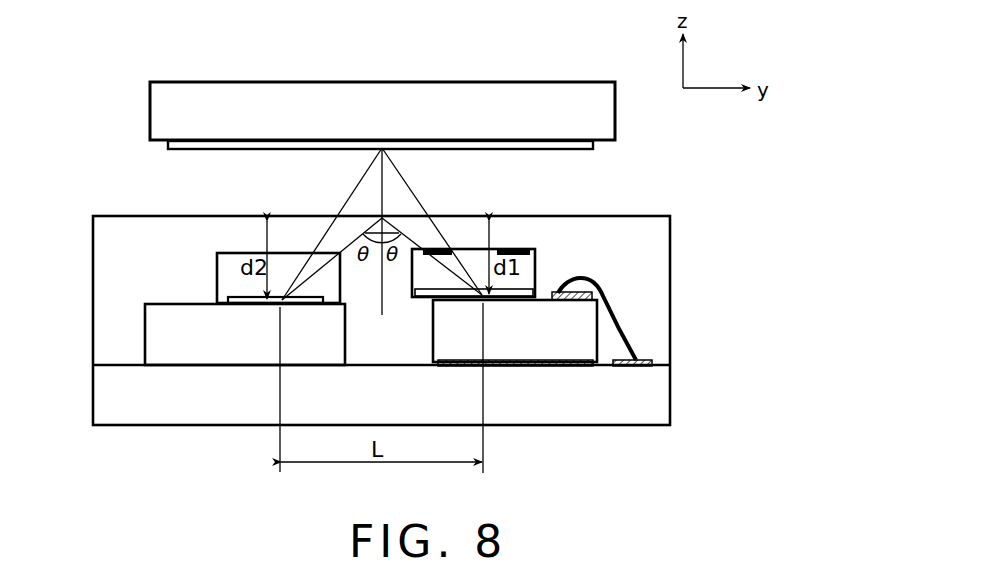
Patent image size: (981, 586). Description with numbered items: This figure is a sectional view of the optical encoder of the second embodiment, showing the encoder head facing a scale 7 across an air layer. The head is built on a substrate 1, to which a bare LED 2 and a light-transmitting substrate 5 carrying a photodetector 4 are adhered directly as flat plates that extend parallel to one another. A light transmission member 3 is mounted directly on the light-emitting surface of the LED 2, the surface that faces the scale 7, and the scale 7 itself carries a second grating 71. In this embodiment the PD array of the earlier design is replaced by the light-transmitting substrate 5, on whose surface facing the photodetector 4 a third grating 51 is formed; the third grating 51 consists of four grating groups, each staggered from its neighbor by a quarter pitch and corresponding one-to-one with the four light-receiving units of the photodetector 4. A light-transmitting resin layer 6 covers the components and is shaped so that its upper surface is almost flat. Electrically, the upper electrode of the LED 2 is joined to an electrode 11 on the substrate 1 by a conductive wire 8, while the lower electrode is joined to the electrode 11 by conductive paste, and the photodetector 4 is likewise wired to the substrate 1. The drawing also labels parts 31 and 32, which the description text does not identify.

The substrate 1 is at (159, 410).
The bare LED 2 is at (597, 313).
The light transmission member 3 is at (560, 249).
The photodetector 4 is at (157, 342).
The light-transmitting substrate 5 is at (217, 255).
The light-transmitting resin layer 6 is at (670, 253).
The scale 7 is at (162, 110).
The conductive wire 8 is at (634, 350).
The electrode 11 is at (570, 367).
The light receiving layer 31 is at (533, 291).
The electrode 32 is at (518, 248).
The third grating 51 is at (240, 297).
The second grating 71 is at (596, 150).